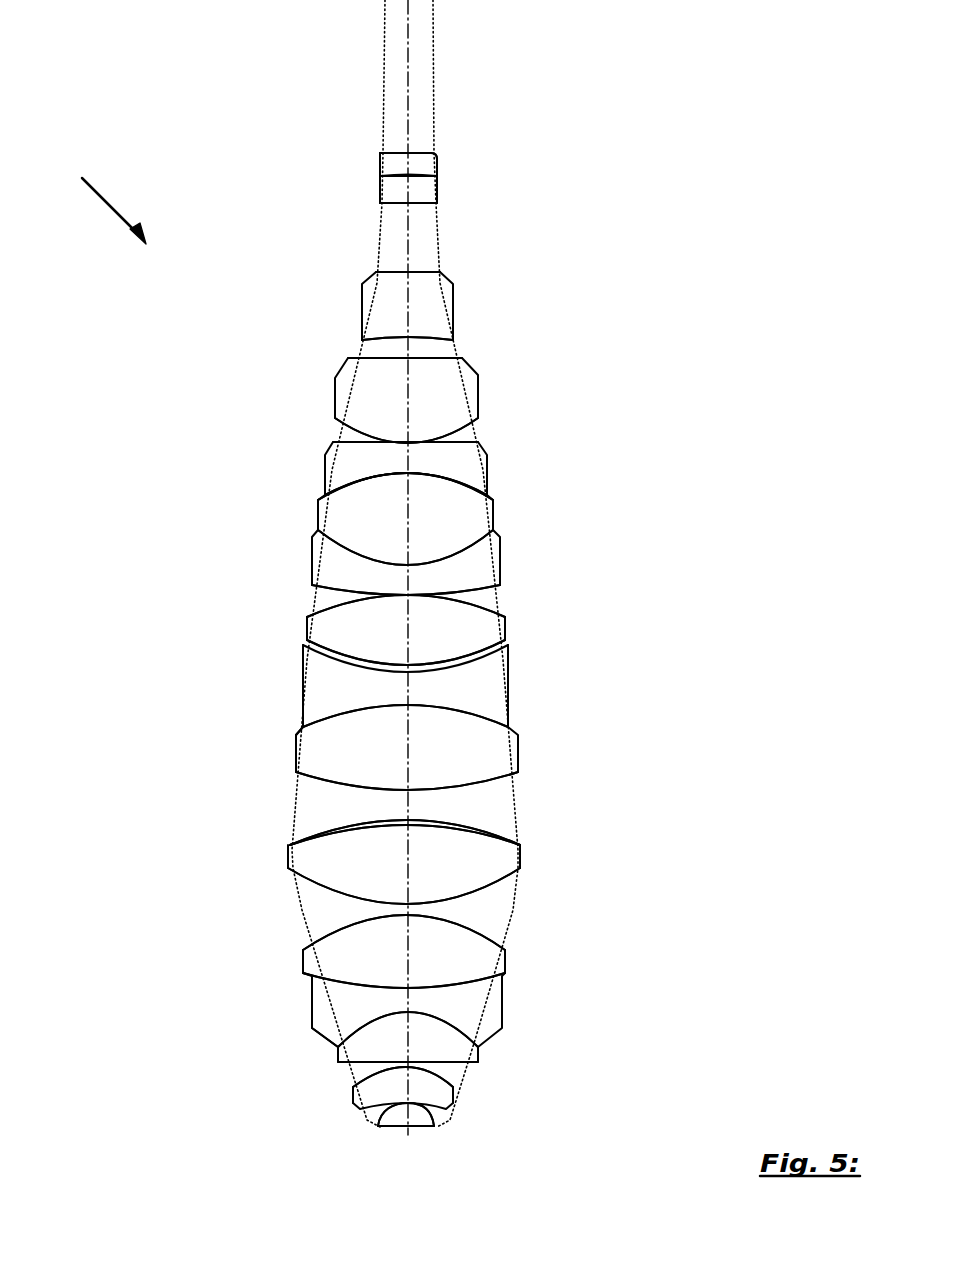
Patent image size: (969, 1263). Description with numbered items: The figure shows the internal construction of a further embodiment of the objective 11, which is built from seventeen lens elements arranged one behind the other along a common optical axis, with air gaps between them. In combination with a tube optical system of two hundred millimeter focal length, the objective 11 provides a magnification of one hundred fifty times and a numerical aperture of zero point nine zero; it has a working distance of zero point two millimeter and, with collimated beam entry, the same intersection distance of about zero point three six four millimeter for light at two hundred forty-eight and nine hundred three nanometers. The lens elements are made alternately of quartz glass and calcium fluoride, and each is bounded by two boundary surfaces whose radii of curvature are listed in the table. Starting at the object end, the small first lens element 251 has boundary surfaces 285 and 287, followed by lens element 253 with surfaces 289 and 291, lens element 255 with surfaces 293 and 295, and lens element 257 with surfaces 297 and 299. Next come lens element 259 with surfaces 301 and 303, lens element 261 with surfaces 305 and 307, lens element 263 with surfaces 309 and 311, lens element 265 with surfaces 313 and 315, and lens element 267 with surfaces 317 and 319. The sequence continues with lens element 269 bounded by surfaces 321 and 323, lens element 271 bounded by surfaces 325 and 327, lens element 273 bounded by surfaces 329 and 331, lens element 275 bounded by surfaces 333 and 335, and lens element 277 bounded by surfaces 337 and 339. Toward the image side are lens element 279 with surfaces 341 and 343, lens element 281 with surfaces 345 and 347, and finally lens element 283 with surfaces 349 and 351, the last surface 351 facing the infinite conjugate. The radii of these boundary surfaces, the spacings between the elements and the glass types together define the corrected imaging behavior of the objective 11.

The objective 11 is at (89, 194).
The lens element 251 is at (378, 1122).
The lens element 253 is at (413, 1078).
The lens element 255 is at (365, 1048).
The lens element 257 is at (453, 1010).
The lens element 259 is at (350, 965).
The lens element 261 is at (467, 865).
The lens element 263 is at (327, 813).
The lens element 265 is at (467, 753).
The lens element 267 is at (367, 692).
The lens element 269 is at (473, 622).
The lens element 271 is at (372, 577).
The lens element 273 is at (442, 518).
The lens element 275 is at (380, 458).
The lens element 277 is at (422, 390).
The lens element 279 is at (380, 303).
The lens element 281 is at (420, 190).
The lens element 283 is at (395, 170).
The boundary surface 285 is at (403, 1130).
The boundary surface 287 is at (418, 1120).
The boundary surface 289 is at (382, 1120).
The boundary surface 291 is at (363, 1077).
The boundary surface 293 is at (443, 1067).
The boundary surface 295 is at (447, 1036).
The boundary surface 297 is at (362, 1025).
The boundary surface 299 is at (430, 982).
The boundary surface 301 is at (365, 980).
The boundary surface 303 is at (463, 917).
The boundary surface 305 is at (328, 889).
The boundary surface 307 is at (452, 832).
The boundary surface 309 is at (455, 850).
The boundary surface 311 is at (325, 775).
The boundary surface 313 is at (355, 777).
The boundary surface 315 is at (485, 730).
The boundary surface 317 is at (452, 732).
The boundary surface 319 is at (345, 677).
The boundary surface 321 is at (367, 650).
The boundary surface 323 is at (358, 627).
The boundary surface 325 is at (445, 605).
The boundary surface 327 is at (443, 563).
The boundary surface 329 is at (372, 530).
The boundary surface 331 is at (368, 503).
The boundary surface 333 is at (457, 480).
The boundary surface 335 is at (470, 445).
The boundary surface 337 is at (350, 430).
The boundary surface 339 is at (385, 362).
The boundary surface 341 is at (395, 332).
The boundary surface 343 is at (423, 283).
The boundary surface 345 is at (415, 205).
The boundary surface 347 is at (383, 192).
The boundary surface 349 is at (428, 153).
The boundary surface 351 is at (398, 152).